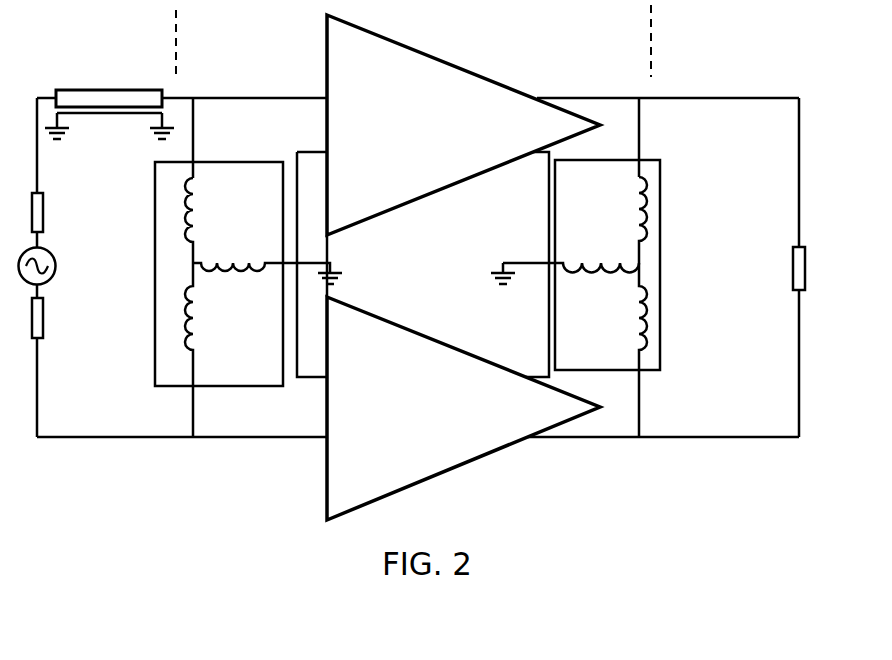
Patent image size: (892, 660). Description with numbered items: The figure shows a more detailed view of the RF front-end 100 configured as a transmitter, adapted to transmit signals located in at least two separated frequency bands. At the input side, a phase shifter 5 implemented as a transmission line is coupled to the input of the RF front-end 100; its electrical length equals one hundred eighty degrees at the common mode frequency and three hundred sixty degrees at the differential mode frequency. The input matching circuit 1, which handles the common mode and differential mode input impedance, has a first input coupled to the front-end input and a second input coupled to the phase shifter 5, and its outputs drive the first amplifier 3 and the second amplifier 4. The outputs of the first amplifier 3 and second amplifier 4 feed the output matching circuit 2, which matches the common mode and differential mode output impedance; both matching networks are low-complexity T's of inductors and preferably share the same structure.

The RF front-end 100 is at (445, 523).
The input matching circuit 1 is at (247, 368).
The output matching circuit 2 is at (615, 357).
The first amplifier 3 is at (467, 178).
The second amplifier 4 is at (468, 463).
The phase shifter 5 is at (82, 89).